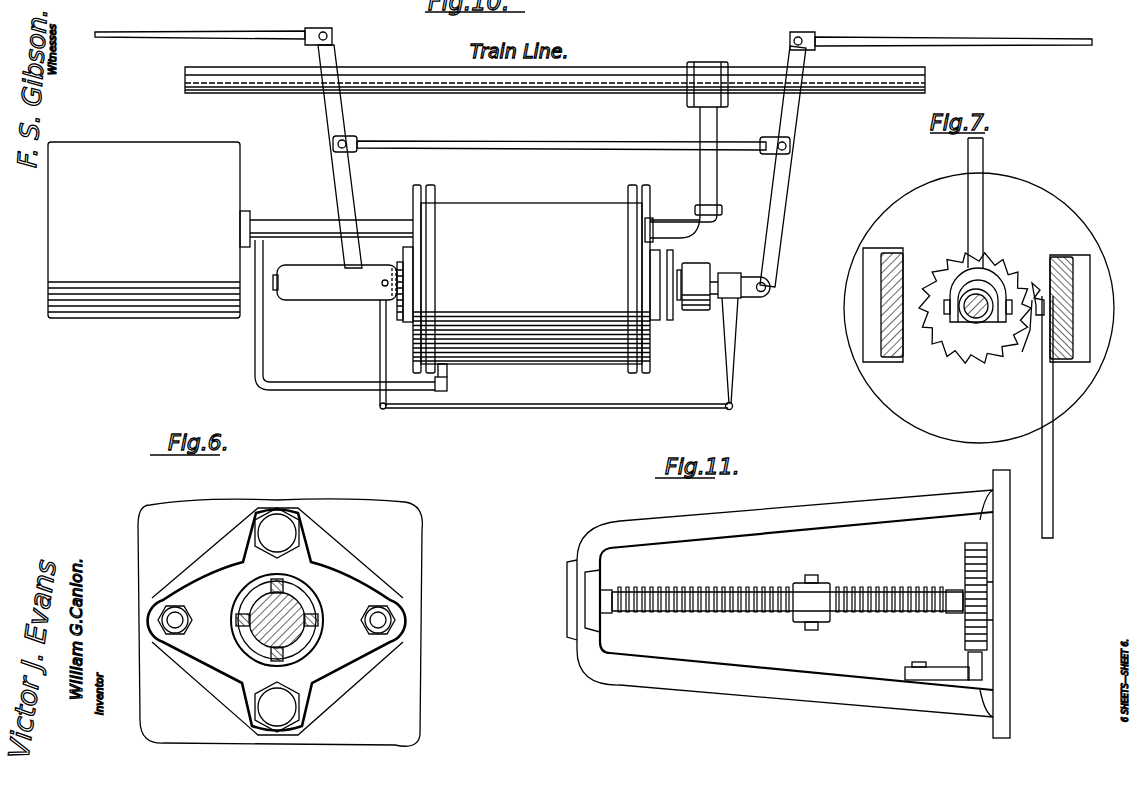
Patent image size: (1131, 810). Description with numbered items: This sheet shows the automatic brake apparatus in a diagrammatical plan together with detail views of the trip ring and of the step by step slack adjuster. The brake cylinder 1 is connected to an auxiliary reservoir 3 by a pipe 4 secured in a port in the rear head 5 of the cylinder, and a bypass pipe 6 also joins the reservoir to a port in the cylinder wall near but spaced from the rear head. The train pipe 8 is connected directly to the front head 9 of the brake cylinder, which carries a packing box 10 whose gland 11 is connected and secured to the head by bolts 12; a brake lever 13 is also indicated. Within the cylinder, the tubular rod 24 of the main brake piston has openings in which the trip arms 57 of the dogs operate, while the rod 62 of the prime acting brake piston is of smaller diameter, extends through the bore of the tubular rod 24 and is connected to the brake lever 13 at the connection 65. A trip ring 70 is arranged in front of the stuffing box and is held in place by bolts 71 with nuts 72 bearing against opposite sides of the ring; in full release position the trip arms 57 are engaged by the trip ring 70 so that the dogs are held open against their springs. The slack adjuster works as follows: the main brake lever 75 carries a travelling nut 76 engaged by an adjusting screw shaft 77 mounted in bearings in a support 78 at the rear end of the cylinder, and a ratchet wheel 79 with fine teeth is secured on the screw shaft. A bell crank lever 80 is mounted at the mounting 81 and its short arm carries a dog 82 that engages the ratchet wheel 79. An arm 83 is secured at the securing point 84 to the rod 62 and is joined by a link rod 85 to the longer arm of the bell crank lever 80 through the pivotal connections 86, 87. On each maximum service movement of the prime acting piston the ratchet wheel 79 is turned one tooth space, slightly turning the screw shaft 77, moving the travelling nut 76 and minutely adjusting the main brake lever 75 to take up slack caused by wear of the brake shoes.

In FIG. 10, the brake cylinder 1 is at (517, 216).
In FIG. 10, the auxiliary reservoir 3 is at (137, 152).
In FIG. 10, the pipe 4 is at (281, 228).
In FIG. 10, the rear head 5 is at (412, 200).
In FIG. 10, the bypass pipe 6 is at (313, 390).
In FIG. 10, the train pipe 8 is at (717, 184).
In FIG. 10, the front head 9 is at (652, 205).
In FIG. 6, the packing box 10 is at (360, 573).
In FIG. 6, the gland 11 is at (243, 573).
In FIG. 6, the bolts 12 is at (278, 525).
In FIG. 10, the brake lever 13 is at (784, 184).
In FIG. 6, the tubular rod 24 is at (303, 645).
In FIG. 6, the trip arms 57 is at (290, 590).
In FIG. 6, the rod 62 is at (258, 604).
In FIG. 10, the connection 65 is at (772, 280).
In FIG. 6, the trip ring 70 is at (300, 575).
In FIG. 6, the bolts 71 is at (166, 620).
In FIG. 6, the nuts 72 is at (172, 612).
In FIG. 10, the main brake lever 75 is at (348, 115).
In FIG. 7, the main brake lever 75 is at (987, 154).
In FIG. 7, the travelling nut 76 is at (978, 324).
In FIG. 11, the travelling nut 76 is at (828, 593).
In FIG. 7, the adjusting screw shaft 77 is at (970, 318).
In FIG. 11, the adjusting screw shaft 77 is at (718, 590).
In FIG. 10, the support 78 is at (328, 292).
In FIG. 7, the support 78 is at (893, 257).
In FIG. 11, the support 78 is at (785, 524).
In FIG. 10, the ratchet wheel 79 is at (400, 264).
In FIG. 7, the ratchet wheel 79 is at (1003, 262).
In FIG. 11, the ratchet wheel 79 is at (965, 560).
In FIG. 10, the bell crank lever 80 is at (380, 326).
In FIG. 7, the bell crank lever 80 is at (1055, 440).
In FIG. 11, the bell crank lever 80 is at (932, 673).
In FIG. 10, the mounting 81 is at (381, 283).
In FIG. 7, the mounting 81 is at (1038, 322).
In FIG. 11, the mounting 81 is at (913, 664).
In FIG. 7, the dog 82 is at (1039, 290).
In FIG. 11, the dog 82 is at (978, 672).
In FIG. 10, the arm 83 is at (735, 347).
In FIG. 10, the securing point 84 is at (732, 275).
In FIG. 10, the link rod 85 is at (557, 396).
In FIG. 10, the pivotal connection 86 is at (733, 407).
In FIG. 10, the pivotal connection 87 is at (383, 410).
In FIG. 7, the pivotal connection 87 is at (1055, 532).